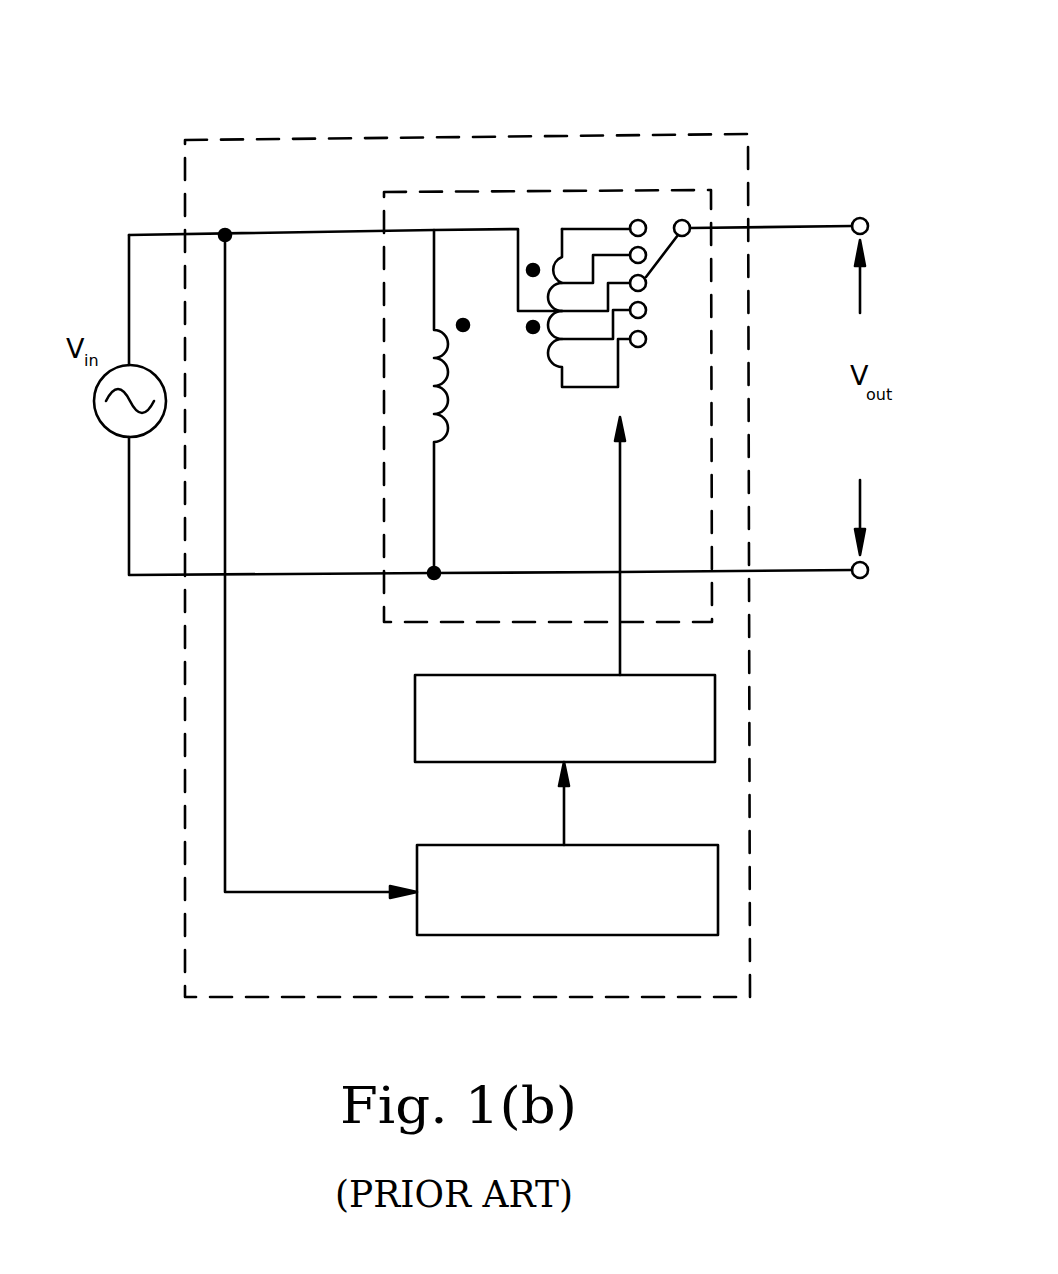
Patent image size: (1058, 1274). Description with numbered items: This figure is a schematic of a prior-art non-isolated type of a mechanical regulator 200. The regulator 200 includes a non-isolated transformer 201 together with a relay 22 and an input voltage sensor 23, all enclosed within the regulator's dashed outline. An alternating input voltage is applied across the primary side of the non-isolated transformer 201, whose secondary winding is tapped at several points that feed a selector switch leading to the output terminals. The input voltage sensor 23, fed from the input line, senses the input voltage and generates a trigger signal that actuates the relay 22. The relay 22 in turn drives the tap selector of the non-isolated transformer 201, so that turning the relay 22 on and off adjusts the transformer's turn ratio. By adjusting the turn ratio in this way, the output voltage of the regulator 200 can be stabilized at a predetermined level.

The non-isolated type of a mechanical regulator 200 is at (250, 190).
The non-isolated transformer 201 is at (640, 200).
The relay 22 is at (435, 712).
The input voltage sensor 23 is at (433, 868).